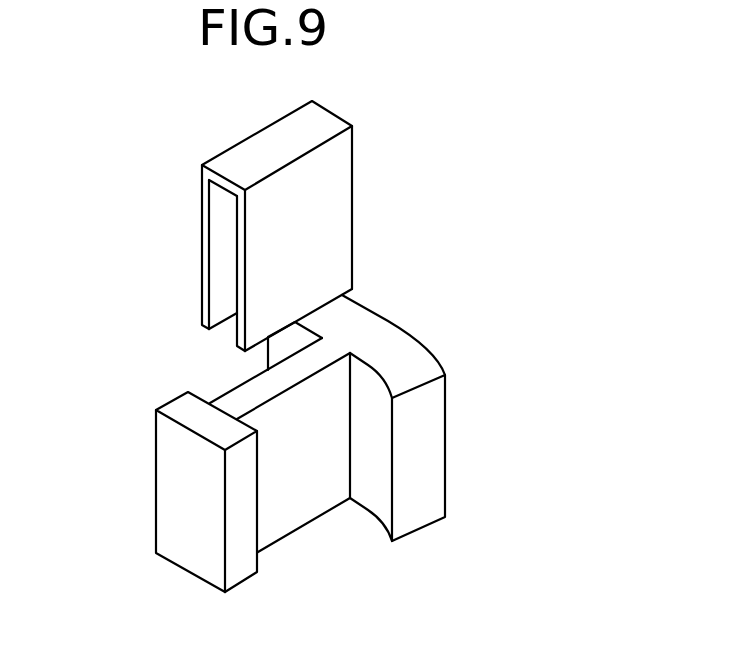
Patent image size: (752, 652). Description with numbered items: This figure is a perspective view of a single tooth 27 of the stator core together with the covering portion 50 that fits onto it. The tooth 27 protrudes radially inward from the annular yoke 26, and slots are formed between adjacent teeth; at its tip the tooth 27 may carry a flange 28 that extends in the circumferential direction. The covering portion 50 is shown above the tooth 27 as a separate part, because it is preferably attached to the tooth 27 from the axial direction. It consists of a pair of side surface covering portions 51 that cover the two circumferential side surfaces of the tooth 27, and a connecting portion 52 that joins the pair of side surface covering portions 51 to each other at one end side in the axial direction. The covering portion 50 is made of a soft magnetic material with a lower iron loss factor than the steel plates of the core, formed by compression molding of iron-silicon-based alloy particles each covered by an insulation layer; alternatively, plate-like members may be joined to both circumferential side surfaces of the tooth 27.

The covering portion 50 is at (217, 214).
The connecting portion 52 is at (265, 145).
The side surface covering portions 51 is at (238, 275).
The yoke 26 is at (302, 443).
The tooth 27 is at (300, 513).
The flange 28 is at (260, 554).